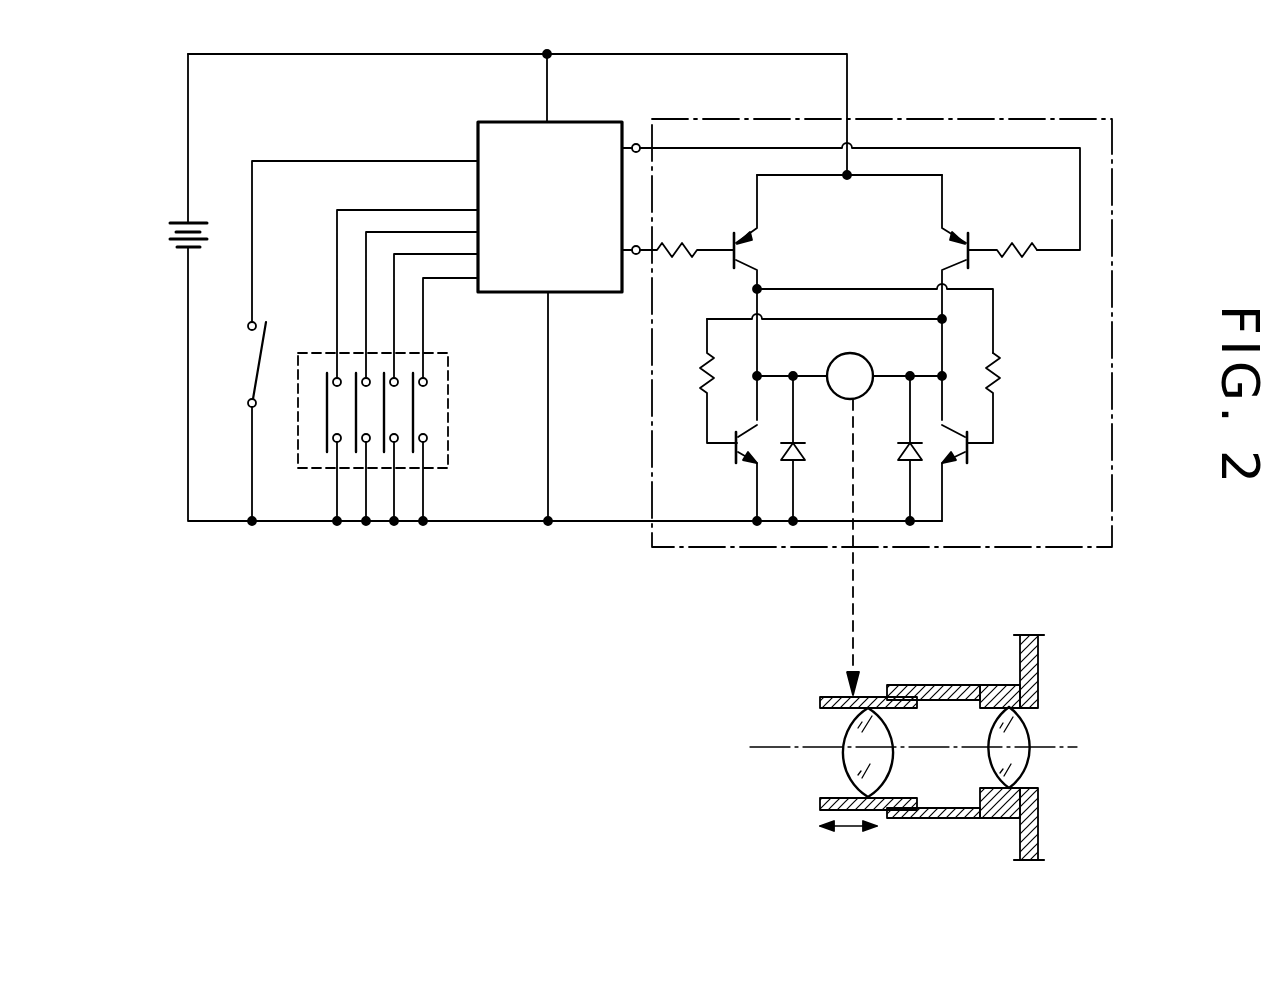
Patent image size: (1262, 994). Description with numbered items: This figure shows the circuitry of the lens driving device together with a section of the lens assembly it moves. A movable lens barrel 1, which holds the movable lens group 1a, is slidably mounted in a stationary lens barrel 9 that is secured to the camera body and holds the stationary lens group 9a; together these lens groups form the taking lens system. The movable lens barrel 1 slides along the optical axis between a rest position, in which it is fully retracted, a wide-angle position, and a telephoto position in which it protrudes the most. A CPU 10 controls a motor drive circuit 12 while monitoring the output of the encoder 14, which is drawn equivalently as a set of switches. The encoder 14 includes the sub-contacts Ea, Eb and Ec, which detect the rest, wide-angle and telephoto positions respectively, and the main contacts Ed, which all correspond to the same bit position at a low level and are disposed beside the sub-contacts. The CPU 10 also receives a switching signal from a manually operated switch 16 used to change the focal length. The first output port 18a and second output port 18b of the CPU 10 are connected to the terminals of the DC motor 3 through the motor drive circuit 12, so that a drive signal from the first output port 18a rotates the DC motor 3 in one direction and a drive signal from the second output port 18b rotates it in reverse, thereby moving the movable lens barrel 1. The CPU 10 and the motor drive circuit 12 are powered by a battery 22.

The movable lens barrel 1 is at (834, 731).
The movable lens group 1a is at (848, 760).
The DC motor 3 is at (866, 361).
The stationary lens barrel 9 is at (998, 767).
The stationary lens group 9a is at (1022, 757).
The CPU 10 is at (490, 122).
The motor drive circuit 12 is at (876, 301).
The encoder 14 is at (412, 367).
The switch 16 is at (261, 354).
The first output port 18a is at (636, 144).
The second output port 18b is at (636, 254).
The battery 22 is at (188, 247).
The sub-contact Ea is at (336, 378).
The sub-contact Eb is at (365, 378).
The sub-contact Ec is at (395, 378).
The main contacts Ed is at (424, 378).